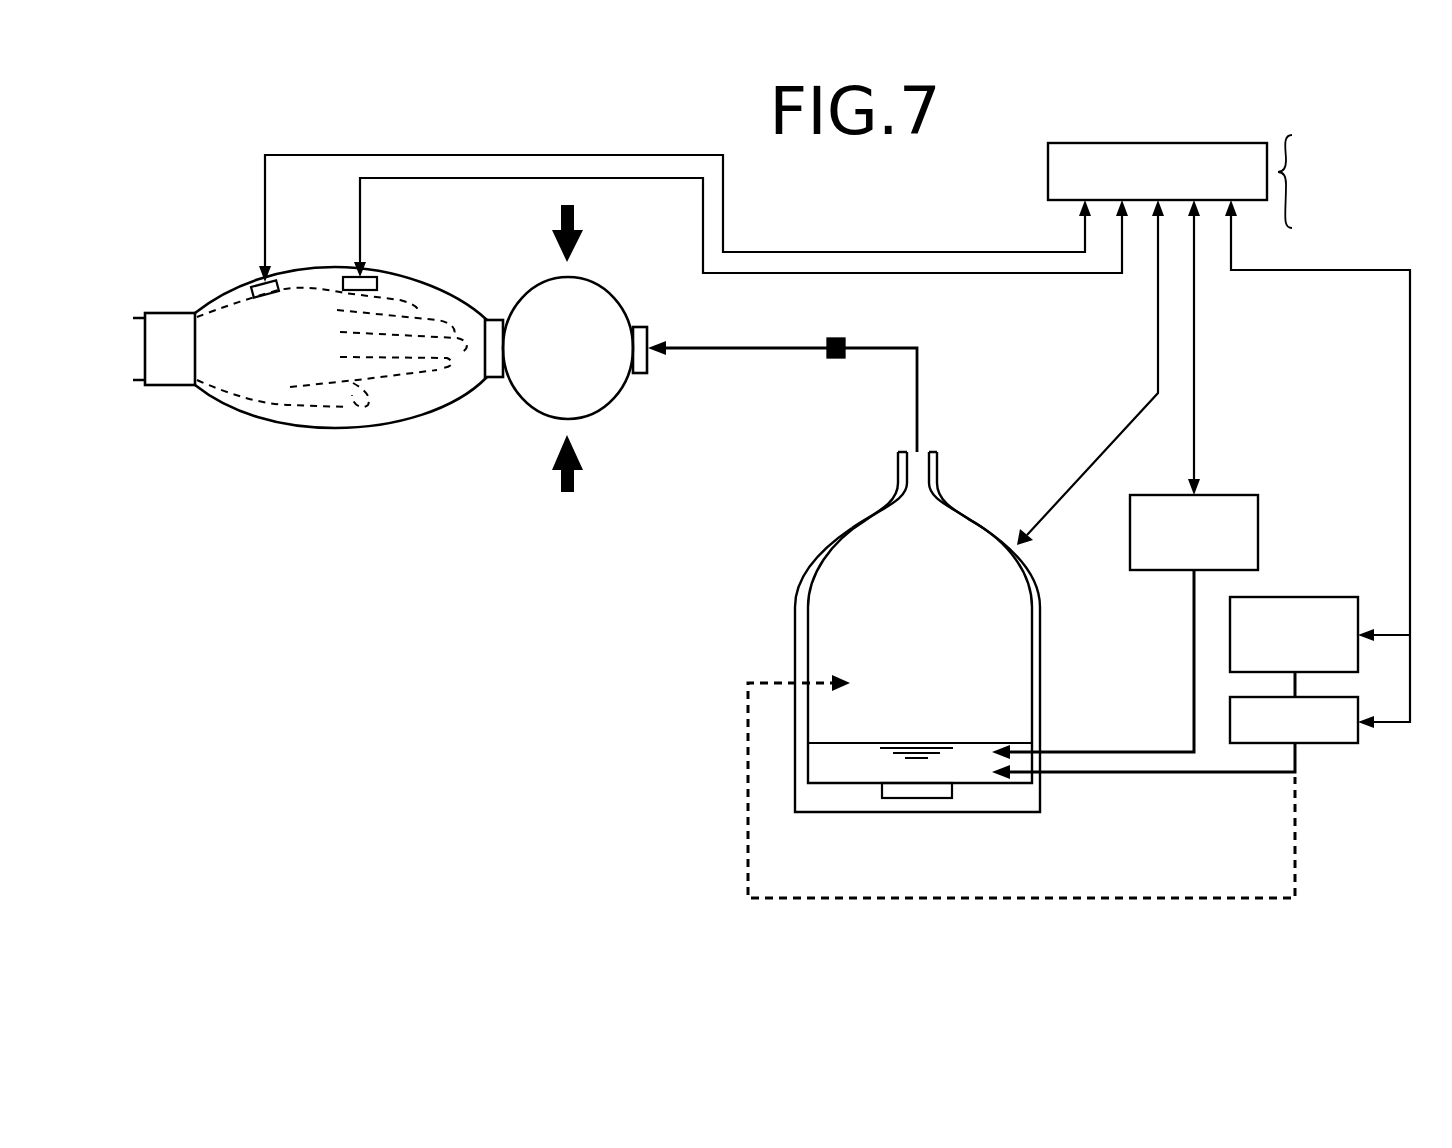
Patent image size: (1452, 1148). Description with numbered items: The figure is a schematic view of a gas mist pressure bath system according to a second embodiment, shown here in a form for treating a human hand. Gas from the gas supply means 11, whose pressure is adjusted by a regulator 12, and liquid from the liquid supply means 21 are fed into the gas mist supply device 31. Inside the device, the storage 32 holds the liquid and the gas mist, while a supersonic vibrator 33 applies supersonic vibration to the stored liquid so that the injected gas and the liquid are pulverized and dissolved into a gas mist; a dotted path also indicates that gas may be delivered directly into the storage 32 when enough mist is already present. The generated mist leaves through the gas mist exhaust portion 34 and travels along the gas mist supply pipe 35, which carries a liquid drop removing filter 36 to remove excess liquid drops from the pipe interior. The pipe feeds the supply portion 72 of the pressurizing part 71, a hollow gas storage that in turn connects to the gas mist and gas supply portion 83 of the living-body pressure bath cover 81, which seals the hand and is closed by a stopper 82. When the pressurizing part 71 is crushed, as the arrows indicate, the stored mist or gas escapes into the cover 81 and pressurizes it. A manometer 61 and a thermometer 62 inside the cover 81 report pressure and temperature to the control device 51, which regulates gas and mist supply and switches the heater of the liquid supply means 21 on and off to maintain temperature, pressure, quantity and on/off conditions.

The gas supply means 11 is at (1333, 597).
The regulator 12 is at (1322, 745).
The liquid supply means 21 is at (1232, 495).
The gas mist supply device 31 is at (893, 650).
The storage 32 is at (800, 580).
The supersonic vibrator 33 is at (932, 798).
The gas mist exhaust portion 34 is at (938, 472).
The gas mist supply pipe 35 is at (742, 346).
The liquid drop removing filter 36 is at (838, 338).
The control device 51 is at (1048, 162).
The manometer 61 is at (368, 277).
The thermometer 62 is at (275, 280).
The pressurizing part 71 is at (598, 280).
The supply portion 72 is at (641, 376).
The living-body pressure bath cover 81 is at (447, 265).
The stopper 82 is at (167, 312).
The gas mist and gas supply portion 83 is at (493, 387).